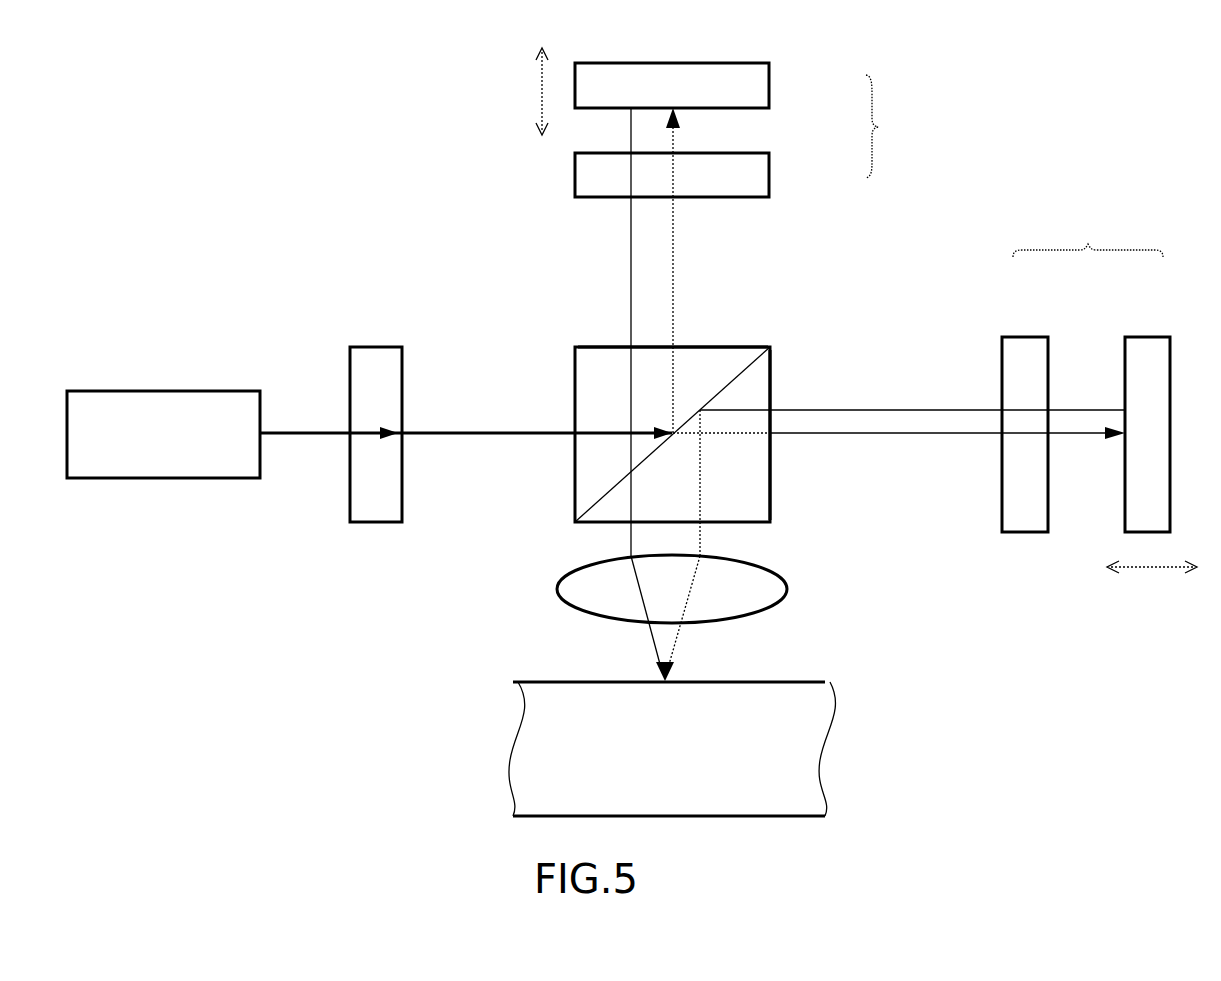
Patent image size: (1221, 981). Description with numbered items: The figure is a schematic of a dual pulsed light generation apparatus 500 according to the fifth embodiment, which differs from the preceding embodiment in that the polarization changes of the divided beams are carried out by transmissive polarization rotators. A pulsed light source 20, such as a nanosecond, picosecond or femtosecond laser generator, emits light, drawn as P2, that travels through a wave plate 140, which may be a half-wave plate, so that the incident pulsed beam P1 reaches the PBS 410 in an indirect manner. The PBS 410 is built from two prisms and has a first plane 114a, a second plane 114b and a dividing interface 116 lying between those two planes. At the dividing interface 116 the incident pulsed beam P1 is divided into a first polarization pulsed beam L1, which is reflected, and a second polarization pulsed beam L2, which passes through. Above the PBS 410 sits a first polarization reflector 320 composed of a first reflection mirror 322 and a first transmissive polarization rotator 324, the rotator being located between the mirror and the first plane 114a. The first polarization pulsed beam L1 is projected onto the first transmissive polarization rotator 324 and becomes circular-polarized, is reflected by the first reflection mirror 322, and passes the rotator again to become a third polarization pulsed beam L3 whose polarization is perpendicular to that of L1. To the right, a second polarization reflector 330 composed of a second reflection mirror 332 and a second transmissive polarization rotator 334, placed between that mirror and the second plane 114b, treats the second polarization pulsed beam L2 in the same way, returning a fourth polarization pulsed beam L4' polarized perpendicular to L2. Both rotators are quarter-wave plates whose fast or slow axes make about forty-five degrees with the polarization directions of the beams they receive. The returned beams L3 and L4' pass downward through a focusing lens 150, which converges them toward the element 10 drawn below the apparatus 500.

The pulsed light source 20 is at (138, 445).
The wave plate 140 is at (372, 358).
The second polarization state of light P2 is at (295, 437).
The incident pulsed beam P1 is at (459, 437).
The dividing interface 116 is at (590, 496).
The first plane 114a is at (740, 335).
The second plane 114b is at (785, 503).
The third polarization pulsed beam L3 is at (631, 240).
The first polarization pulsed beam L1 is at (673, 234).
The fourth polarization pulsed beam L4' is at (896, 482).
The second polarization pulsed beam L2 is at (926, 437).
The focusing lens 150 is at (776, 598).
The workpiece 10 is at (816, 750).
The first reflection mirror 322 is at (758, 86).
The first transmissive polarization rotator 324 is at (762, 173).
The first polarization reflector 320 is at (894, 126).
The dual pulsed light generation apparatus 500 is at (966, 148).
The PBS 410 is at (530, 268).
The second polarization reflector 330 is at (1088, 238).
The second transmissive polarization rotator 334 is at (1027, 345).
The second reflection mirror 332 is at (1148, 345).